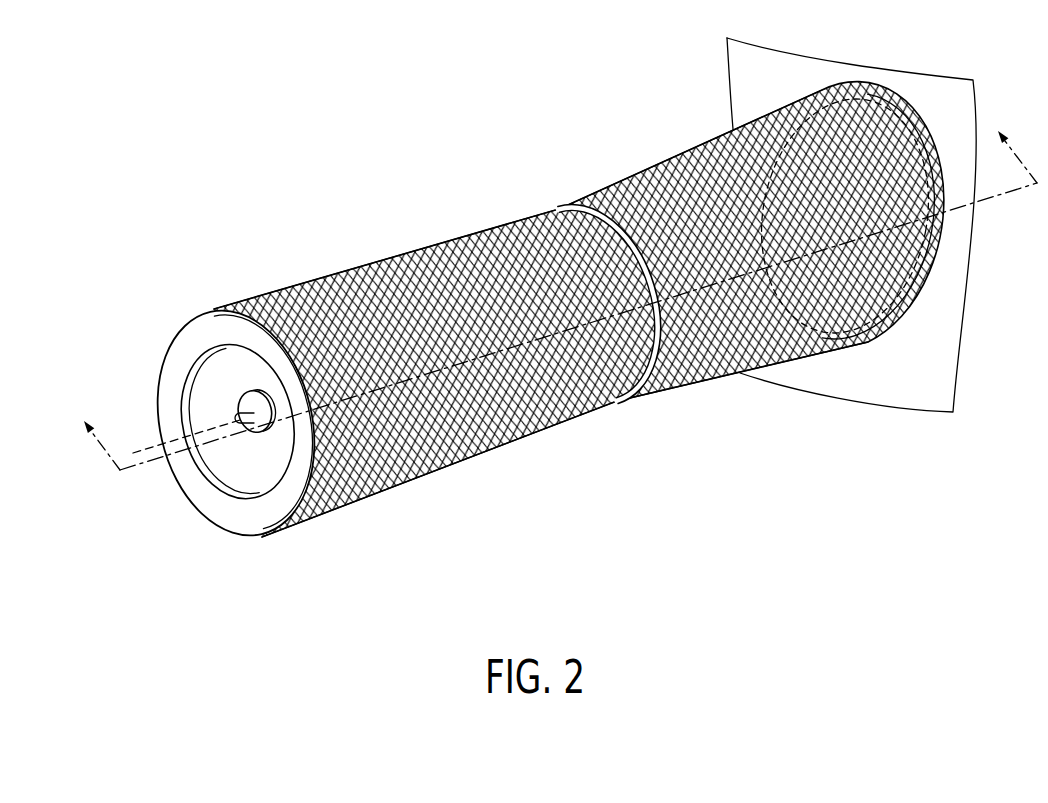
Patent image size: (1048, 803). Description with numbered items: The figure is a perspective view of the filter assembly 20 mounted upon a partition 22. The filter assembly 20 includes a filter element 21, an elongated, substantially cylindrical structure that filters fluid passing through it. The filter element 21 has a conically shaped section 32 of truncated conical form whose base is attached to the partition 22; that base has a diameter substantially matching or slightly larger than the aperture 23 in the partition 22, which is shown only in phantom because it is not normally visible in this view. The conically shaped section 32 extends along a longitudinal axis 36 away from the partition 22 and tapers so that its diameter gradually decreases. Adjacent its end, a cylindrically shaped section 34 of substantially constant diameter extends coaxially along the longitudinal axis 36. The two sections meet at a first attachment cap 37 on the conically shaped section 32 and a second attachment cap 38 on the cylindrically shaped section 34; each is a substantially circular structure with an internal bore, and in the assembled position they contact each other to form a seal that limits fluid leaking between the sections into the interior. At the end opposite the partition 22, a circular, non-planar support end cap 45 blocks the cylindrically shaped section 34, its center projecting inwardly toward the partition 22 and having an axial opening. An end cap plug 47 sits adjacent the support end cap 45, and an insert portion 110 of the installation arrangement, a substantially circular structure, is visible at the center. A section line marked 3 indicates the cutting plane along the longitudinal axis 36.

The filter assembly 20 is at (413, 128).
The filter element 21 is at (316, 278).
The partition 22 is at (856, 76).
The aperture 23 is at (742, 118).
The conically shaped section 32 is at (708, 378).
The cylindrically shaped section 34 is at (492, 457).
The longitudinal axis 36 is at (154, 462).
The first attachment cap 37 is at (637, 384).
The second attachment cap 38 is at (652, 346).
The support end cap 45 is at (203, 399).
The end cap plug 47 is at (254, 405).
The insert portion 110 is at (260, 438).
The section line 3- 3 is at (556, 285).